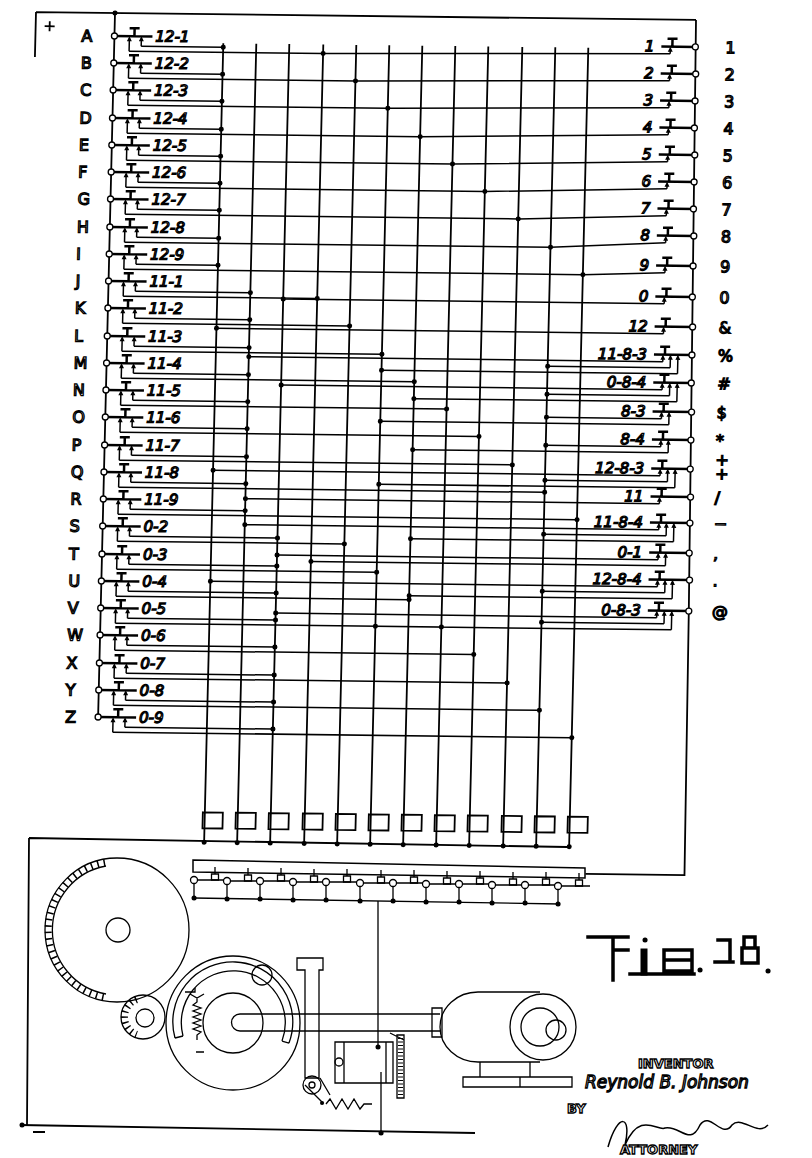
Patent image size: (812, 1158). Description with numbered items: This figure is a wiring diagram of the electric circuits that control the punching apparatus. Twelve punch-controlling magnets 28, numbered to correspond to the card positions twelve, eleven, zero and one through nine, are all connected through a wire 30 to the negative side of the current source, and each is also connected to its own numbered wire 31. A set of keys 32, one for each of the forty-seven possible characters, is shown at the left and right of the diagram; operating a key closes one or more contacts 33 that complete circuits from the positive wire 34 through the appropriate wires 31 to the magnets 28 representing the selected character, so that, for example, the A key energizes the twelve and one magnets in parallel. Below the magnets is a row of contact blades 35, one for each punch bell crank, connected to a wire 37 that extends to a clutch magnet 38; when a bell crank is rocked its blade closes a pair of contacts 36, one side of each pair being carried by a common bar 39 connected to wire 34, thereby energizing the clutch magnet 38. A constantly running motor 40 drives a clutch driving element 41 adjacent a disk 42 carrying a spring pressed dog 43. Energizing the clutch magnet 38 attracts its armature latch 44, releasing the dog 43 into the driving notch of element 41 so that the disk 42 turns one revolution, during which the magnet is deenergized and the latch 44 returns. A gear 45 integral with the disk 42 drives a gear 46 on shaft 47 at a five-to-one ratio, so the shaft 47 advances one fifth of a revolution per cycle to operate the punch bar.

The magnet 28 is at (495, 806).
The wire 30 is at (128, 840).
The wire 31 is at (288, 748).
The key 32 is at (138, 30).
The contact 33 is at (131, 122).
The wire 34 is at (721, 744).
The contact blade 35 is at (497, 898).
The contacts 36 is at (443, 878).
The wire 37 is at (378, 982).
The clutch magnet 38 is at (383, 1075).
The common bar 39 is at (582, 872).
The motor 40 is at (517, 995).
The clutch driving element 41 is at (237, 1041).
The disk 42 is at (199, 1067).
The spring pressed dog 43 is at (242, 967).
The armature latch 44 is at (318, 983).
The gear 45 is at (121, 1032).
The gear 46 is at (74, 986).
The shaft 47 is at (107, 931).